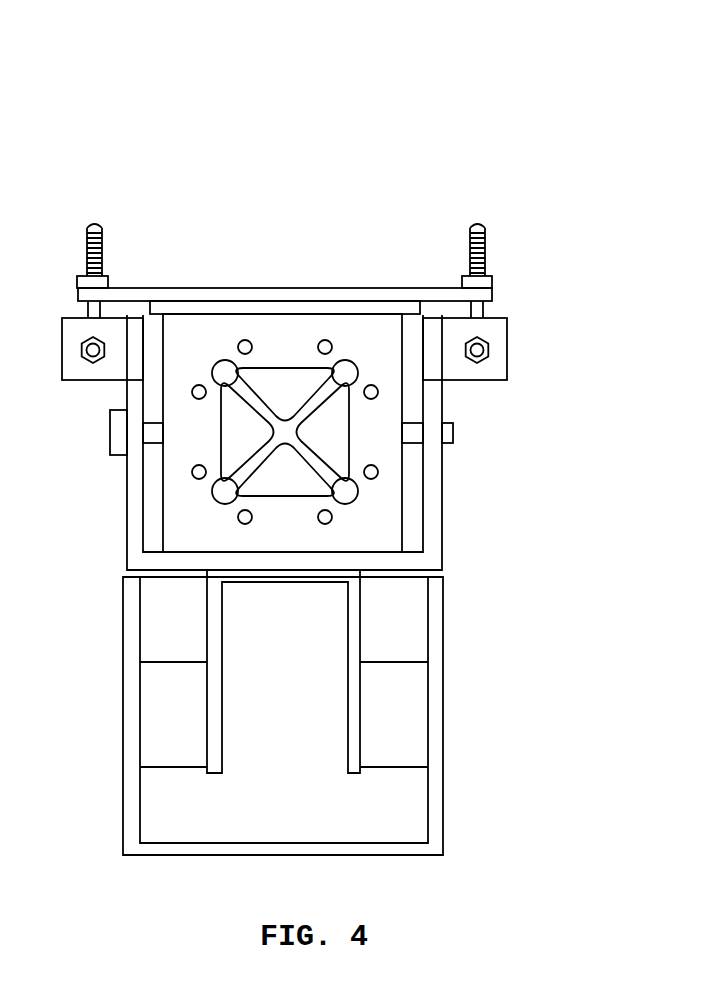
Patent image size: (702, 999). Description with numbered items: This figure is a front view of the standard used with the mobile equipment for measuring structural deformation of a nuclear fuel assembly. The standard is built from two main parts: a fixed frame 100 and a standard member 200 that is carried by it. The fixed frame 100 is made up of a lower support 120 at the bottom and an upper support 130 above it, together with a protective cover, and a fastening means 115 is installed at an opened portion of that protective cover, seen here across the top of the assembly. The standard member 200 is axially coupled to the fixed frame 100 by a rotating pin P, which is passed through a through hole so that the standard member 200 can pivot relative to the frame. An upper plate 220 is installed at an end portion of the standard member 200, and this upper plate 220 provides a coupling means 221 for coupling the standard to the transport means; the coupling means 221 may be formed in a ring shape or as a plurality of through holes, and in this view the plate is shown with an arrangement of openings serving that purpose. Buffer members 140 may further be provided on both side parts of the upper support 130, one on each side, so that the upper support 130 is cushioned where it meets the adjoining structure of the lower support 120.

The fixed frame 100 is at (133, 160).
The fastening means 115 is at (255, 293).
The standard member 200 is at (360, 306).
The upper plate 220 is at (175, 519).
The coupling means 221 is at (282, 482).
The rotating pin P is at (105, 433).
The lower support 120 is at (462, 805).
The upper support 130 is at (380, 627).
The buffer members 140 is at (150, 715).